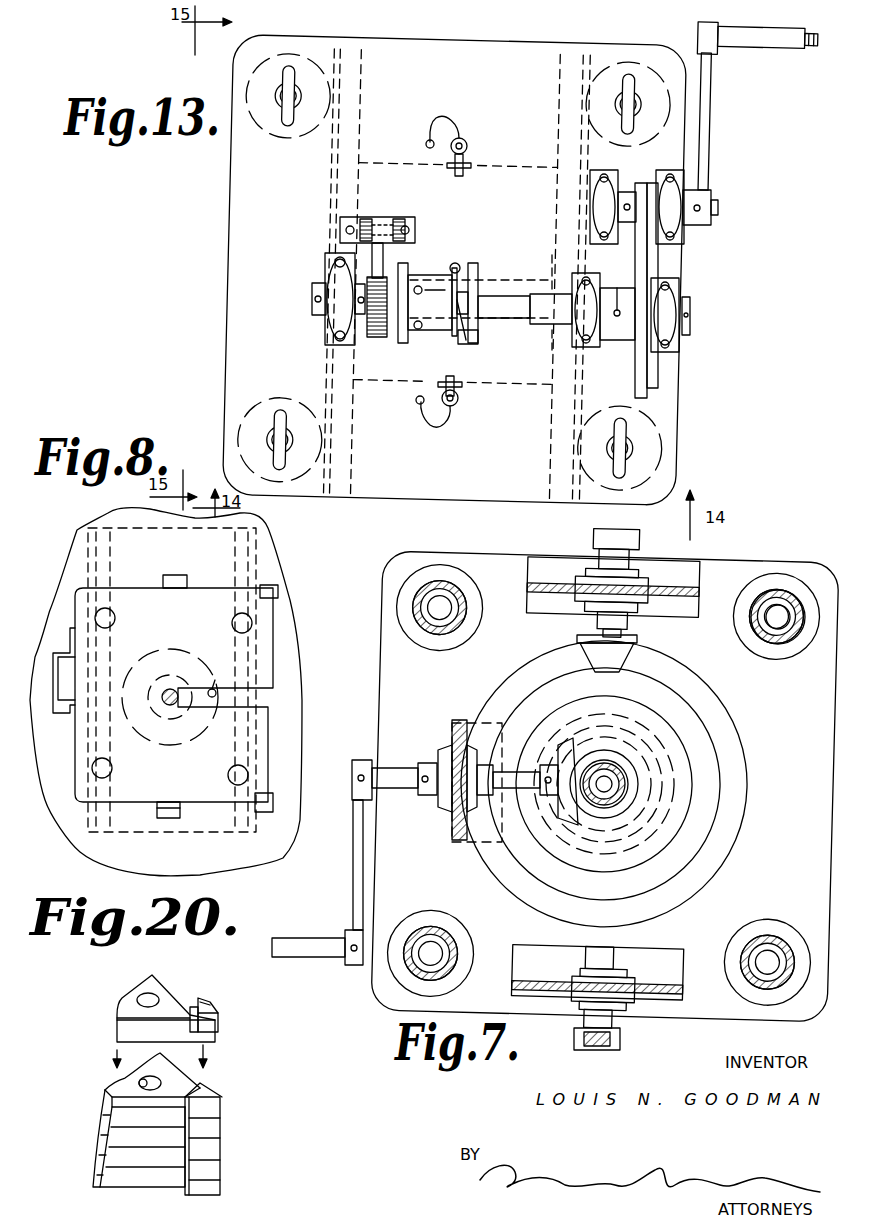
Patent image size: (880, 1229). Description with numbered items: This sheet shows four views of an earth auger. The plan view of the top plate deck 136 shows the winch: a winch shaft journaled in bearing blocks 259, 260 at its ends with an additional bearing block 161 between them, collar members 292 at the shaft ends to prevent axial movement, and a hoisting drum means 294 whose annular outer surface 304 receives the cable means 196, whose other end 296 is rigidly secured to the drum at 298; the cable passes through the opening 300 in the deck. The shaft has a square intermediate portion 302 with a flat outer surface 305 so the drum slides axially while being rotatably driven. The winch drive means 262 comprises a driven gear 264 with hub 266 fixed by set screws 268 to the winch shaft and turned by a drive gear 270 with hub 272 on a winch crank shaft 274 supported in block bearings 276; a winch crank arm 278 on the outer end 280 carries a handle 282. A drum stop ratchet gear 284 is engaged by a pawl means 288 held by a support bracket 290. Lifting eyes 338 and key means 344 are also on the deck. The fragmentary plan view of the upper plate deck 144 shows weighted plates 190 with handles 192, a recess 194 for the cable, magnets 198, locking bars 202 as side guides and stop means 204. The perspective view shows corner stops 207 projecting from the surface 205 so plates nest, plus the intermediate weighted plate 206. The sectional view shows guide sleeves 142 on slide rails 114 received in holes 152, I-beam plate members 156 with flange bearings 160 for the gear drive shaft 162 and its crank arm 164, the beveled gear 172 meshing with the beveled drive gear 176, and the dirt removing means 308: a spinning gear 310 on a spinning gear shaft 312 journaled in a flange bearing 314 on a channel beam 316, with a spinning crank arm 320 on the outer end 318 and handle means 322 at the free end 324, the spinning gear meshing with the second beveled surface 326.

In FIG. 13, the top plate deck 136 is at (496, 87).
In FIG. 13, the lifting eyes 338 is at (290, 123).
In FIG. 13, the key means 344 is at (470, 148).
In FIG. 13, the additional bearing block 161 is at (568, 362).
In FIG. 13, the support bracket 290 is at (415, 225).
In FIG. 13, the pawl means 288 is at (383, 252).
In FIG. 13, the drum stop ratchet gear 284 is at (376, 337).
In FIG. 13, the bearing block 260 is at (325, 265).
In FIG. 13, the collar members 292 is at (317, 315).
In FIG. 13, the hoisting drum means 294 is at (430, 330).
In FIG. 13, the annular outer surface 304 is at (439, 291).
In FIG. 13, the opening 300 is at (458, 262).
In FIG. 13, the intermediate portion 302 is at (494, 290).
In FIG. 13, the cable means 196 is at (462, 303).
In FIG. 8, the cable means 196 is at (183, 705).
In FIG. 13, the cable securing point 298 is at (478, 340).
In FIG. 13, the other end of cable means 296 is at (460, 340).
In FIG. 13, the outer surface of intermediate portion 305 is at (525, 309).
In FIG. 13, the winch drive means 262 is at (745, 194).
In FIG. 13, the winch crank shaft 274 is at (616, 182).
In FIG. 13, the drive gear 270 is at (648, 185).
In FIG. 13, the hub of drive gear 272 is at (615, 229).
In FIG. 13, the driven gear 264 is at (640, 382).
In FIG. 13, the outer end of winch crank shaft 280 is at (718, 208).
In FIG. 13, the winch crank arm 278 is at (712, 118).
In FIG. 13, the handle 282 is at (760, 48).
In FIG. 13, the block bearings 276 is at (592, 197).
In FIG. 13, the hub of driven gear 266 is at (610, 340).
In FIG. 13, the set screws 268 is at (617, 288).
In FIG. 13, the bearing block 259 is at (680, 343).
In FIG. 8, the upper plate deck 144 is at (293, 638).
In FIG. 8, the weighted plates 190 is at (220, 592).
In FIG. 20, the weighted plates 190 is at (117, 1010).
In FIG. 8, the surface of weighted plate 205 is at (192, 623).
In FIG. 20, the surface of weighted plate 205 is at (180, 1106).
In FIG. 8, the magnets 198 is at (112, 770).
In FIG. 20, the magnets 198 is at (160, 995).
In FIG. 8, the recess 194 is at (215, 680).
In FIG. 8, the handles 192 is at (52, 712).
In FIG. 8, the locking bars 202 is at (167, 820).
In FIG. 8, the stop means 204 is at (267, 813).
In FIG. 20, the stop means 204 is at (222, 1015).
In FIG. 20, the corner stops 207 is at (215, 1025).
In FIG. 20, the intermediate weighted plate 206 is at (102, 1177).
In FIG. 7, the beveled drive gear 176 is at (735, 823).
In FIG. 7, the second beveled surface 326 is at (583, 827).
In FIG. 7, the guide sleeves 142 is at (758, 632).
In FIG. 7, the holes 152 is at (768, 648).
In FIG. 7, the slide rails 114 is at (788, 645).
In FIG. 7, the gear drive shaft 162 is at (606, 778).
In FIG. 7, the beveled gear 172 is at (620, 922).
In FIG. 7, the plate members 156 is at (660, 995).
In FIG. 7, the flange bearing 160 is at (615, 1008).
In FIG. 7, the crank arm 164 is at (600, 1050).
In FIG. 7, the dirt removing means 308 is at (437, 755).
In FIG. 7, the outer end of spinning gear shaft 318 is at (348, 775).
In FIG. 7, the spinning gear shaft 312 is at (395, 790).
In FIG. 7, the flange bearing 314 is at (440, 810).
In FIG. 7, the channel beam 316 is at (462, 840).
In FIG. 7, the spinning gear 310 is at (565, 822).
In FIG. 7, the spinning crank arm 320 is at (352, 878).
In FIG. 7, the free end of spinning crank arm 324 is at (355, 965).
In FIG. 7, the handle means 322 is at (333, 935).